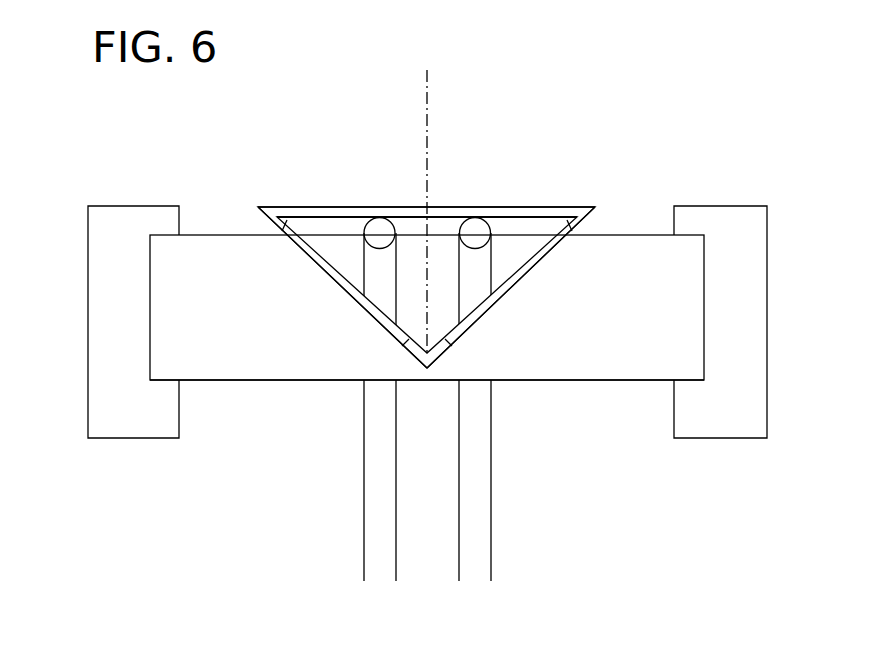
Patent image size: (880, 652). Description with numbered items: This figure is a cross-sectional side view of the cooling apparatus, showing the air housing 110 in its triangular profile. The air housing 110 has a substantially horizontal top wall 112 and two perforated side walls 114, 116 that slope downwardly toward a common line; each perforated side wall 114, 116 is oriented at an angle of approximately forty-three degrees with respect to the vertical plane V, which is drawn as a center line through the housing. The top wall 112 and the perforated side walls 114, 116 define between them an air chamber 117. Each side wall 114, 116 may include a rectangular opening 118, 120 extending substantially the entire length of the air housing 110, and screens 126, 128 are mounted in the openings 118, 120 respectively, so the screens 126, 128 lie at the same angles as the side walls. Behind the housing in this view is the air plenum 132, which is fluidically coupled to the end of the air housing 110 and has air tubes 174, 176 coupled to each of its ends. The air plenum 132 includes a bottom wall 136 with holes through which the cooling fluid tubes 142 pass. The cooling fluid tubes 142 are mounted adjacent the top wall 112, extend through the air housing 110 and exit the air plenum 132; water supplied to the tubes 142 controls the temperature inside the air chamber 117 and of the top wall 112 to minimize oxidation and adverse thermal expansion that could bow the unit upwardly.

The vertical plane V is at (426, 125).
The air housing 110 is at (334, 207).
The top wall 112 is at (460, 207).
The perforated side wall 114 is at (327, 277).
The perforated side wall 116 is at (507, 290).
The air chamber 117 is at (513, 225).
The rectangular opening 118 is at (404, 342).
The rectangular opening 120 is at (450, 342).
The screen 126 is at (305, 252).
The screen 128 is at (548, 250).
The air plenum 132 is at (647, 315).
The bottom wall 136 is at (625, 382).
The cooling fluid tubes 142 is at (364, 545).
The air tube 174 is at (100, 262).
The air tube 176 is at (747, 253).